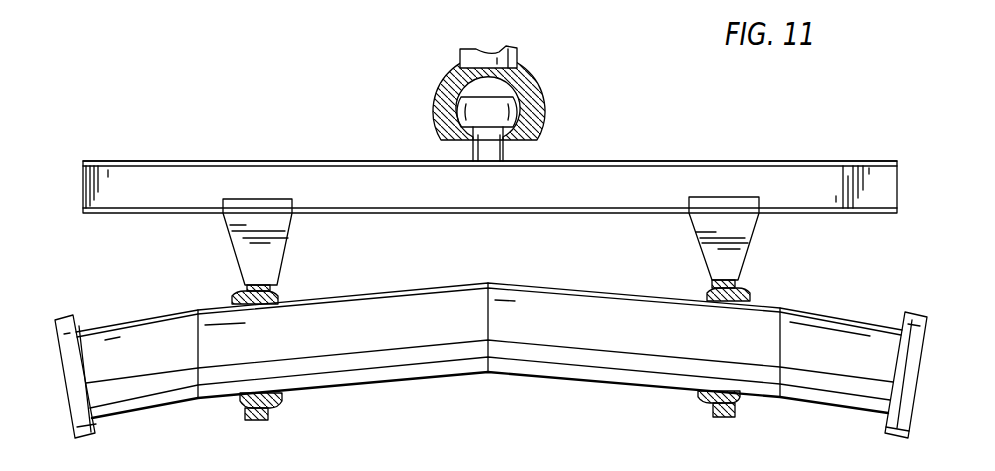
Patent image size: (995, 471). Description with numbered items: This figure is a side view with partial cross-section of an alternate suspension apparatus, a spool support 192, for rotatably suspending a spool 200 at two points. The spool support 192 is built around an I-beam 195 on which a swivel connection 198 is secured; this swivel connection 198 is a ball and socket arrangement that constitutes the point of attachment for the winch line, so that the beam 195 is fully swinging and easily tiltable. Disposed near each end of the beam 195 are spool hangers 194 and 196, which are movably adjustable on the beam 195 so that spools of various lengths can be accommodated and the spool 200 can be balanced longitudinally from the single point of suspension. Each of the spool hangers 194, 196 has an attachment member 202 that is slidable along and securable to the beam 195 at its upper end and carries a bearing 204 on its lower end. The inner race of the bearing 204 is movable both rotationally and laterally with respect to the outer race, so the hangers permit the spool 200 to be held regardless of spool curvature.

The spool support 192 is at (618, 157).
The spool hanger 194 is at (755, 294).
The I-beam 195 is at (316, 160).
The spool hanger 196 is at (282, 285).
The swivel connection 198 is at (530, 74).
The spool 200 is at (526, 282).
The attachment member 202 is at (758, 240).
The bearing 204 is at (698, 393).